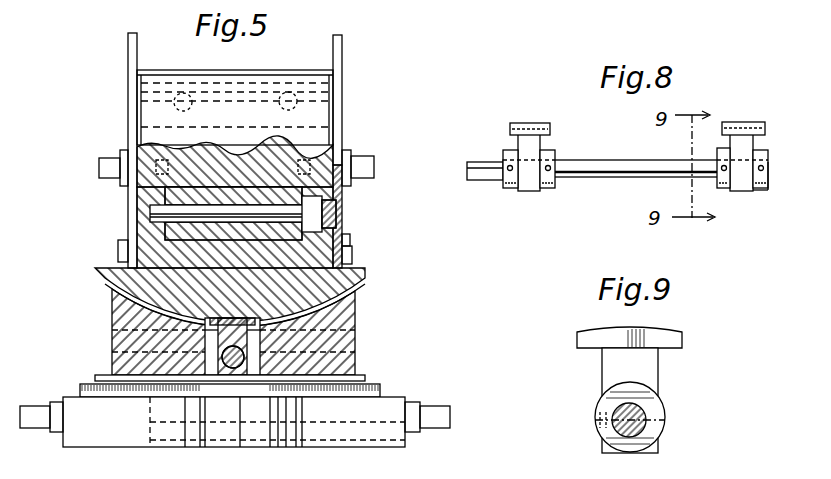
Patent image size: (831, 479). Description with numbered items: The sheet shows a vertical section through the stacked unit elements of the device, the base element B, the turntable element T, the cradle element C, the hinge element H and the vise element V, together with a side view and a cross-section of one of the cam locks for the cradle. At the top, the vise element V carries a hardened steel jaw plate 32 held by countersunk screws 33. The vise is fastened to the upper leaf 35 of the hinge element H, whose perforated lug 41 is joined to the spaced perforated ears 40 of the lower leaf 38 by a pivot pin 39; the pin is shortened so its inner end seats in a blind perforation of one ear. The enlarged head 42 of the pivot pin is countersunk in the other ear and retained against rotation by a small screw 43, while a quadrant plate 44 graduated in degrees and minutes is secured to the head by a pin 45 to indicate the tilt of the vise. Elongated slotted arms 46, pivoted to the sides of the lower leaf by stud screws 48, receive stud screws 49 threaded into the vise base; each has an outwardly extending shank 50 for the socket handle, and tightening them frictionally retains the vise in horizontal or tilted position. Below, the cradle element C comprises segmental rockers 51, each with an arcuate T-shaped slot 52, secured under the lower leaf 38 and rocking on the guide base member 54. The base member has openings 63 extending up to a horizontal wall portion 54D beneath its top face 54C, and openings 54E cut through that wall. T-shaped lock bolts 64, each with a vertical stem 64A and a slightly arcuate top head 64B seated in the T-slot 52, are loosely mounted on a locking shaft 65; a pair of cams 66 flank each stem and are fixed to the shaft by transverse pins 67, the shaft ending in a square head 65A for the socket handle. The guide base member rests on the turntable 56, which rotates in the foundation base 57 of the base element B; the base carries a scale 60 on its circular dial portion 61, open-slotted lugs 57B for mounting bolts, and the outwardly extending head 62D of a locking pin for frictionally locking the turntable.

In FIG. 5, the jaw plate 32 is at (256, 78).
In FIG. 5, the countersunk screws 33 is at (191, 106).
In FIG. 5, the elongated arms 46 is at (128, 52).
In FIG. 5, the quadrant plate 44 is at (342, 152).
In FIG. 5, the perforated lug 41 is at (222, 190).
In FIG. 5, the perforated ears 40 is at (142, 193).
In FIG. 5, the upper leaf 35 is at (165, 230).
In FIG. 5, the pivot pin 39 is at (152, 213).
In FIG. 5, the enlarged head 42 is at (333, 203).
In FIG. 5, the pin 45 is at (330, 214).
In FIG. 5, the stud screws 49 is at (123, 156).
In FIG. 5, the shank 50 is at (100, 164).
In FIG. 5, the small screw 43 is at (350, 240).
In FIG. 5, the stud screws 48 is at (120, 246).
In FIG. 5, the lower leaf 38 is at (125, 282).
In FIG. 5, the arcuate slot 52 is at (362, 274).
In FIG. 5, the rockers 51 is at (135, 300).
In FIG. 5, the guide base member 54 is at (122, 320).
In FIG. 5, the top face 54C is at (350, 330).
In FIG. 5, the horizontal wall portion 54D is at (342, 352).
In FIG. 5, the openings 54E is at (216, 342).
In FIG. 5, the cams 66 is at (218, 333).
In FIG. 8, the cams 66 is at (510, 189).
In FIG. 9, the cams 66 is at (618, 390).
In FIG. 5, the locking shaft 65 is at (244, 357).
In FIG. 8, the locking shaft 65 is at (634, 164).
In FIG. 9, the locking shaft 65 is at (618, 410).
In FIG. 8, the square head 65A is at (480, 168).
In FIG. 5, the scale 60 is at (90, 386).
In FIG. 5, the circular dial portion 61 is at (378, 391).
In FIG. 5, the foundation base 57 is at (115, 432).
In FIG. 5, the open-slotted lugs 57B is at (202, 430).
In FIG. 5, the turntable 56 is at (262, 440).
In FIG. 5, the outwardly extending head 62D is at (446, 395).
In FIG. 5, the openings 63 is at (247, 375).
In FIG. 5, the lock bolts 64 is at (232, 376).
In FIG. 8, the lock bolts 64 is at (544, 117).
In FIG. 9, the lock bolts 64 is at (570, 346).
In FIG. 8, the vertical stem 64A is at (532, 146).
In FIG. 9, the vertical stem 64A is at (642, 366).
In FIG. 8, the top head 64B is at (750, 106).
In FIG. 9, the top head 64B is at (674, 326).
In FIG. 8, the transverse pins 67 is at (508, 171).
In FIG. 9, the transverse pins 67 is at (655, 410).
In FIG. 5, the vise element V is at (132, 108).
In FIG. 5, the hinge element H is at (132, 210).
In FIG. 5, the cradle element C is at (92, 269).
In FIG. 5, the turntable element T is at (92, 378).
In FIG. 5, the base element B is at (72, 432).